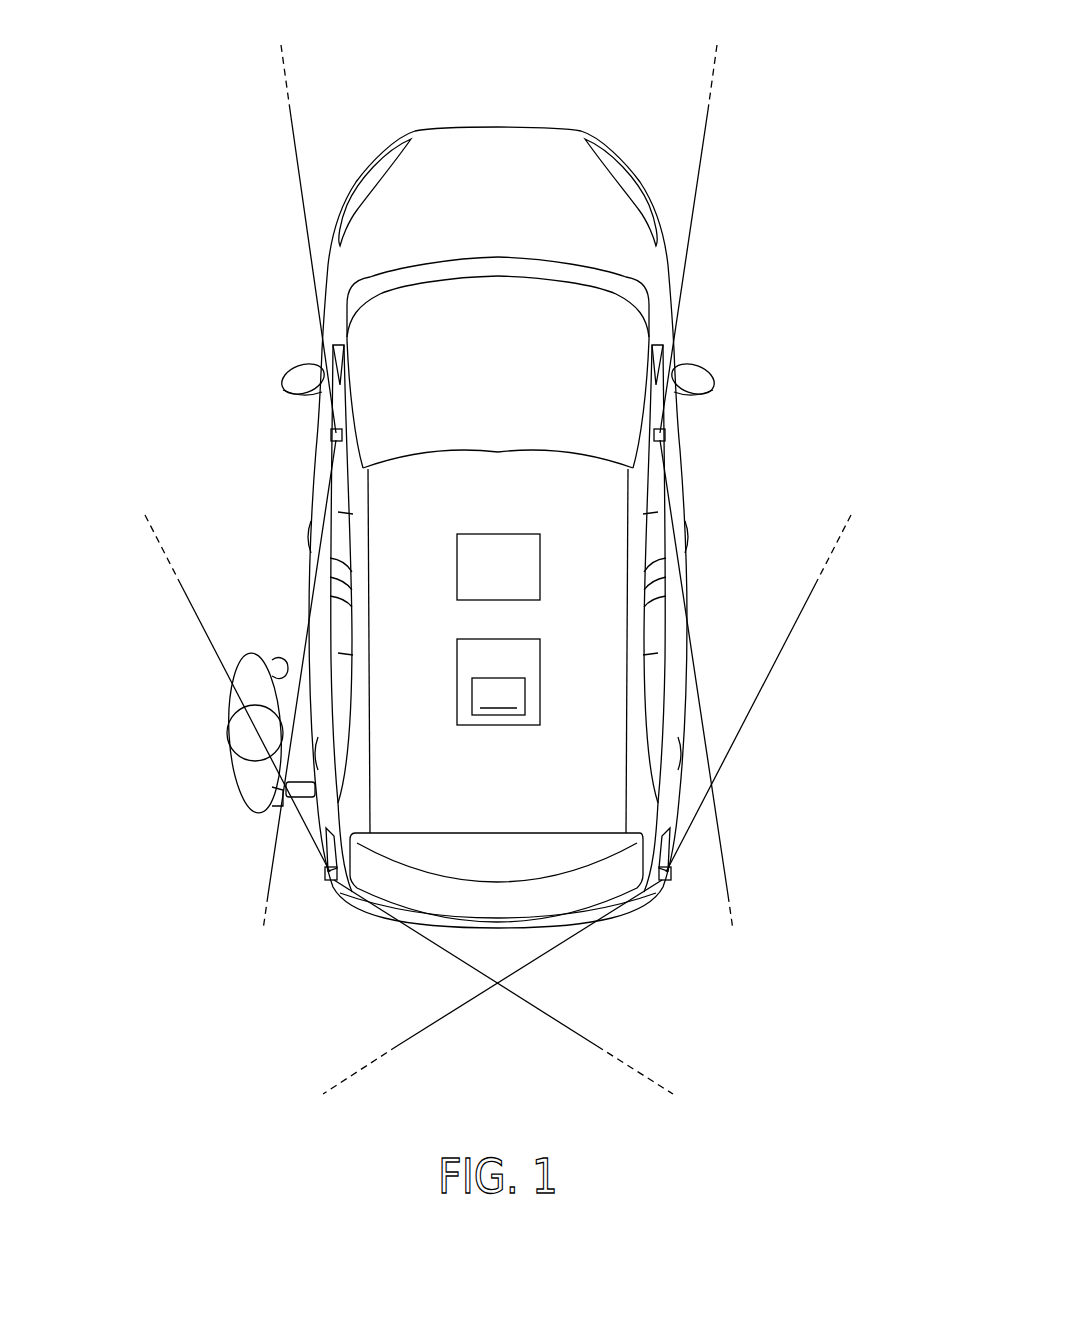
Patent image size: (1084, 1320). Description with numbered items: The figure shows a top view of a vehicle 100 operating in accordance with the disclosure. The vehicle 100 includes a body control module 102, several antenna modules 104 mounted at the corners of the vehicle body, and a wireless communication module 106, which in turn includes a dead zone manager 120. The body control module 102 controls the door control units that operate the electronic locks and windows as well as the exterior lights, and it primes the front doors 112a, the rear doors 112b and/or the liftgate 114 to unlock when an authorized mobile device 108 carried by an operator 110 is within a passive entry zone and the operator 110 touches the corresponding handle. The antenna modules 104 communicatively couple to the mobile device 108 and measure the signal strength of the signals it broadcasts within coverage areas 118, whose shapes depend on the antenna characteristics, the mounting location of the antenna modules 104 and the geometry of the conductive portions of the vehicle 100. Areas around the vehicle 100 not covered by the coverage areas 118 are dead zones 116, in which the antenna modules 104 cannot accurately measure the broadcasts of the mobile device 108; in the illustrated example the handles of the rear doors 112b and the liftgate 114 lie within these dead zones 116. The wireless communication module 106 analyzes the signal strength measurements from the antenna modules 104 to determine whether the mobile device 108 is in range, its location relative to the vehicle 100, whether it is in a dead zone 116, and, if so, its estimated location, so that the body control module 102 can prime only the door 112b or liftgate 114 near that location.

The vehicle 100 is at (472, 128).
The body control module 102 is at (540, 566).
The antenna modules 104 is at (331, 436).
The wireless communication module 106 is at (540, 681).
The mobile device 108 is at (318, 789).
The operator 110 is at (250, 653).
The front doors 112a is at (340, 513).
The rear doors 112b is at (340, 654).
The liftgate 114 is at (495, 851).
The dead zones 116 is at (308, 820).
The coverage areas 118 is at (207, 309).
The dead zone manager 120 is at (498, 696).